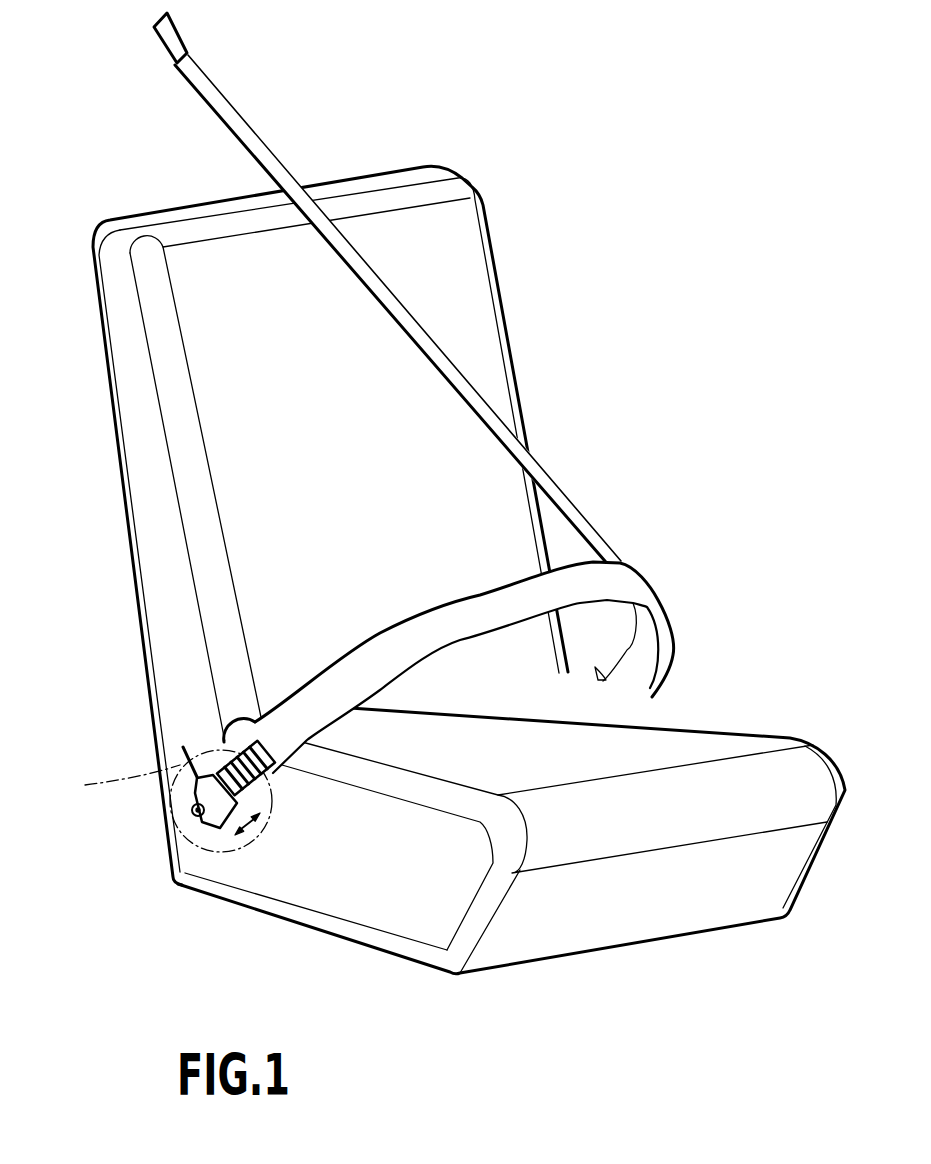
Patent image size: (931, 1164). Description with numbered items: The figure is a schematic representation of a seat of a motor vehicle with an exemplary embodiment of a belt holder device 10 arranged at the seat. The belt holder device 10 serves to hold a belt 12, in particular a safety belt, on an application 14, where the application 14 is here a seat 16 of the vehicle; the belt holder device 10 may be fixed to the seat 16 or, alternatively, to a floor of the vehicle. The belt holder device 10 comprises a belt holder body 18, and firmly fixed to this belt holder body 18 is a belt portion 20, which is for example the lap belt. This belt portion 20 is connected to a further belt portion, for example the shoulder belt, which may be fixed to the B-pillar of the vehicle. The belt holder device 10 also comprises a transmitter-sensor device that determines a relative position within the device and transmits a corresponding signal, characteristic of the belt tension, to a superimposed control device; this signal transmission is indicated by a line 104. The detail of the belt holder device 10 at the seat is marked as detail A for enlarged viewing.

The belt holder device 10 is at (226, 858).
The belt 12 is at (440, 625).
The application 14 is at (330, 895).
The seat 16 is at (163, 613).
The belt holder body 18 is at (208, 820).
The belt portion 20 is at (380, 650).
The line 104 is at (187, 747).